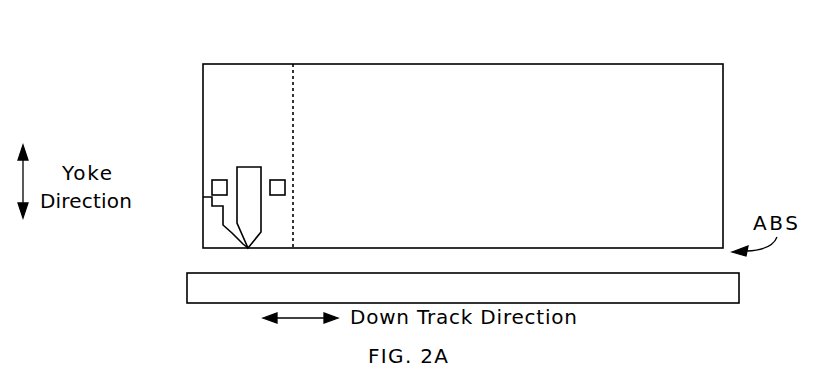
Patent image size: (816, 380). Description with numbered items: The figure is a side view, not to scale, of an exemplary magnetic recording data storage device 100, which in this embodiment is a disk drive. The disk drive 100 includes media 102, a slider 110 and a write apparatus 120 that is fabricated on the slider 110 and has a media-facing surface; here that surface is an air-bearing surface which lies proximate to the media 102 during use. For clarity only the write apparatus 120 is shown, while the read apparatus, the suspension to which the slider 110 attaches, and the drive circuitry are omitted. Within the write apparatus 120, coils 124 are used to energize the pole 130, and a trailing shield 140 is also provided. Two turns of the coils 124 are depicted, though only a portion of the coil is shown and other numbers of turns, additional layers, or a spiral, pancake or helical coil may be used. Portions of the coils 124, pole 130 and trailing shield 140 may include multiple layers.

The magnetic recording data storage device 100 is at (150, 28).
The media 102 is at (187, 300).
The slider 110 is at (723, 127).
The write apparatus 120 is at (295, 118).
The coils 124 is at (277, 180).
The pole 130 is at (245, 167).
The trailing shield 140 is at (203, 229).